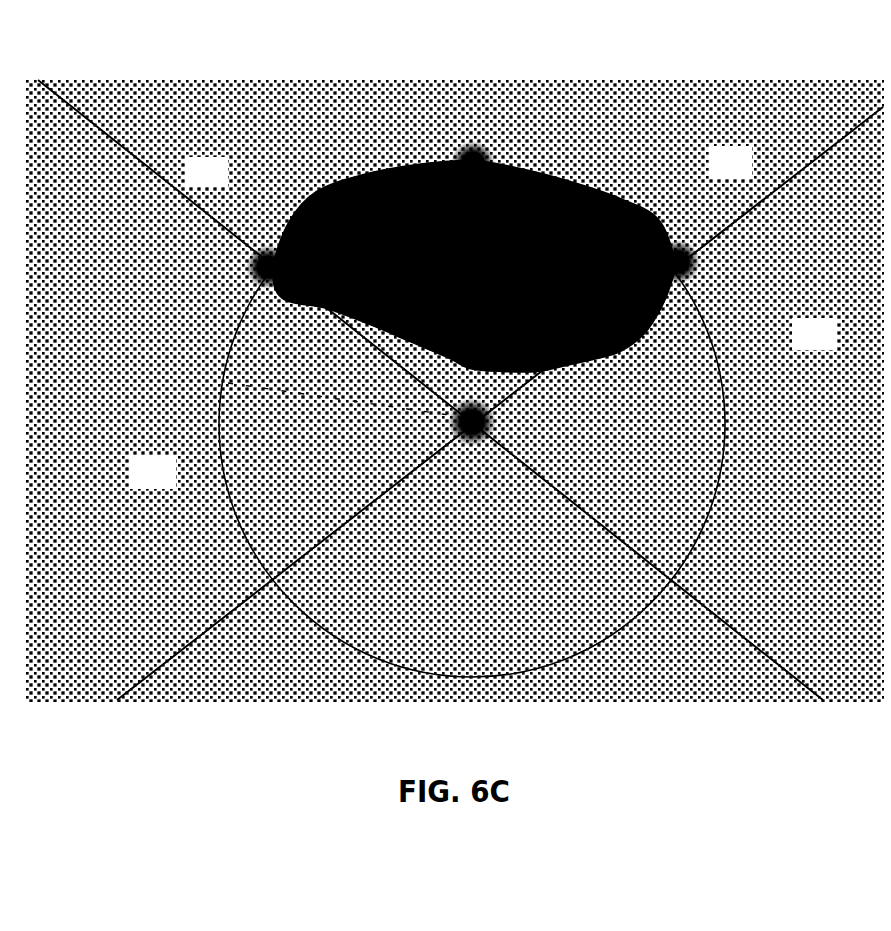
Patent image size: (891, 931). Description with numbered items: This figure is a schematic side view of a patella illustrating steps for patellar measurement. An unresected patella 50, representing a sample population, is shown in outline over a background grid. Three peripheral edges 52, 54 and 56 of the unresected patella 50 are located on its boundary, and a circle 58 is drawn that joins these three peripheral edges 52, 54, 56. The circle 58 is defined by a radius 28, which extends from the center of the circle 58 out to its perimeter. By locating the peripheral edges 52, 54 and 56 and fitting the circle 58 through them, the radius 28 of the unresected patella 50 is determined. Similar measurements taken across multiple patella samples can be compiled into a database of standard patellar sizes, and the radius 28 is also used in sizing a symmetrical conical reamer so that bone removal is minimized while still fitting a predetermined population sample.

The unresected patella 50 is at (372, 140).
The peripheral edge 52 is at (258, 250).
The peripheral edge 54 is at (483, 160).
The peripheral edge 56 is at (677, 240).
The circle 58 is at (727, 400).
The radius 28 is at (298, 398).